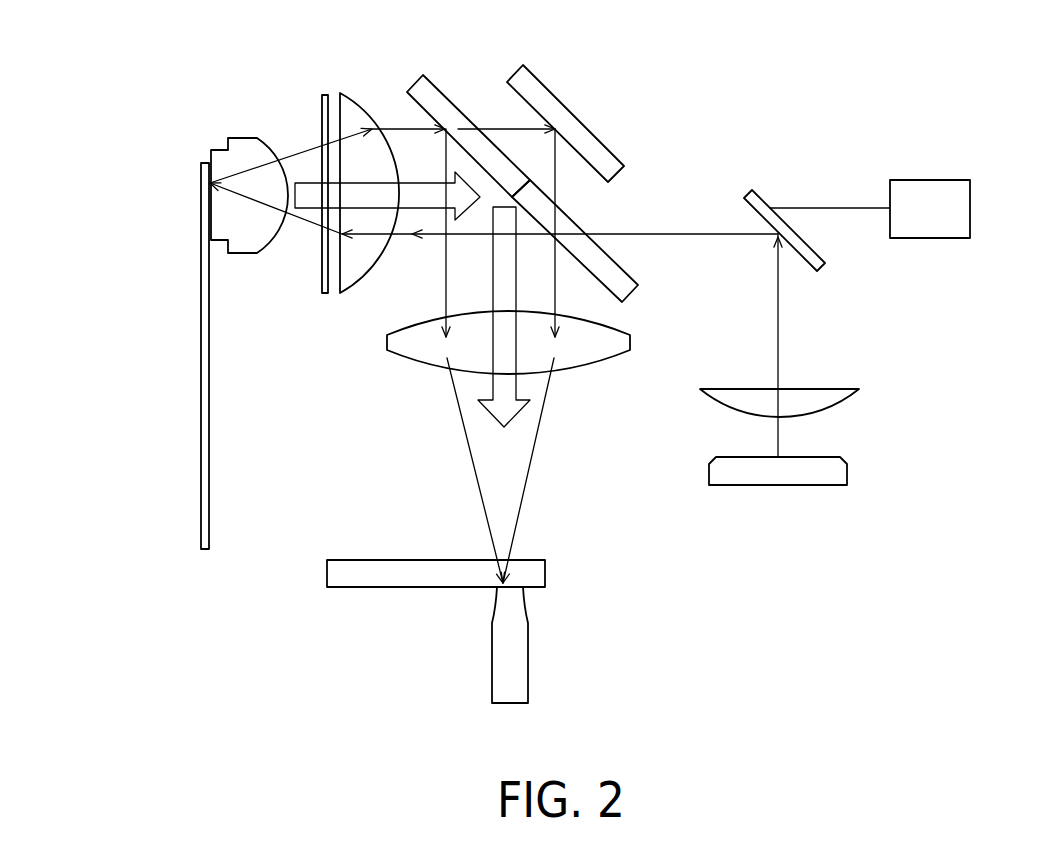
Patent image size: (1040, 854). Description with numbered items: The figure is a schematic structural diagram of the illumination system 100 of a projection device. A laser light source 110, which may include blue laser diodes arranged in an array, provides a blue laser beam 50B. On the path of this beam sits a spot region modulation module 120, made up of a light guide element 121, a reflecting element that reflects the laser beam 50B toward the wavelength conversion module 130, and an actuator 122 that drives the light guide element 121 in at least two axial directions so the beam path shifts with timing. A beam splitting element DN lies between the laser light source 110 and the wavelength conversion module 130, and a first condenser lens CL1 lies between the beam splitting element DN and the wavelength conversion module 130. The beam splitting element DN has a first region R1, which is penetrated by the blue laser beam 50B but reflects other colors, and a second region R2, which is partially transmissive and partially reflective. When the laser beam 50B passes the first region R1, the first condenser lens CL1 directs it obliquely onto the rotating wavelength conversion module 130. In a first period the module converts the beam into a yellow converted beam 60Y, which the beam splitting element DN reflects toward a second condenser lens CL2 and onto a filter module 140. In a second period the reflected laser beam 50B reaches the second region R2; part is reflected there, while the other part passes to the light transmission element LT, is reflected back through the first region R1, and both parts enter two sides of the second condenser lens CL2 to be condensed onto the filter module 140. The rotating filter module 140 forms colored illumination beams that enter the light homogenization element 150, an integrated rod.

The illumination system 100 is at (975, 713).
The laser light source 110 is at (847, 473).
The spot region modulation module 120 is at (885, 179).
The light guide element 121 is at (759, 203).
The actuator 122 is at (967, 203).
The wavelength conversion module 130 is at (204, 378).
The filter module 140 is at (332, 573).
The light homogenization element 150 is at (522, 647).
The laser beam 50B is at (480, 502).
The converted beam 60Y is at (420, 188).
The first condenser lens CL1 is at (352, 116).
The second condenser lens CL2 is at (595, 358).
The first region R1 is at (613, 270).
The second region R2 is at (438, 105).
The light transmission element LT is at (538, 88).
The beam splitting element DN is at (562, 190).